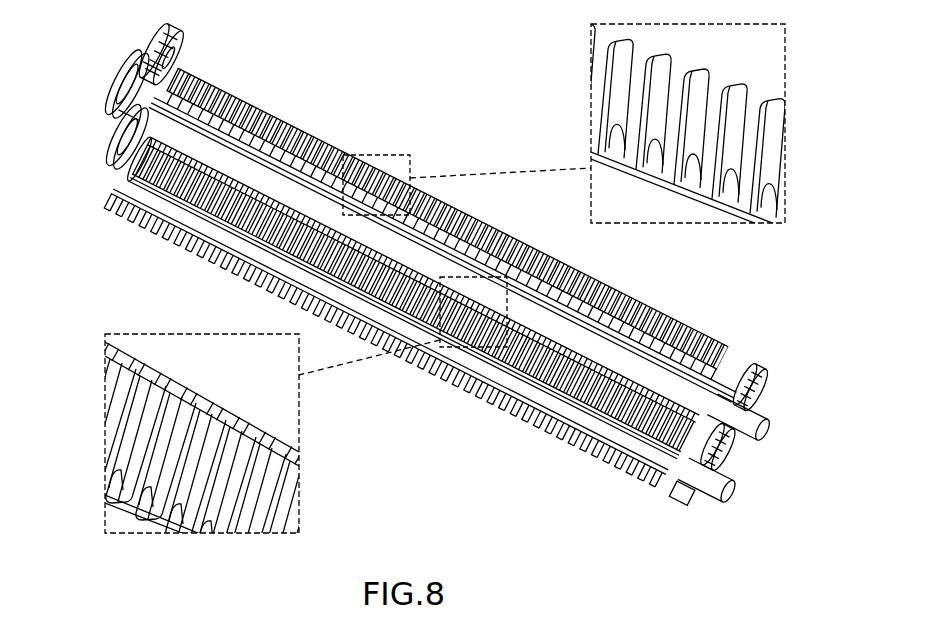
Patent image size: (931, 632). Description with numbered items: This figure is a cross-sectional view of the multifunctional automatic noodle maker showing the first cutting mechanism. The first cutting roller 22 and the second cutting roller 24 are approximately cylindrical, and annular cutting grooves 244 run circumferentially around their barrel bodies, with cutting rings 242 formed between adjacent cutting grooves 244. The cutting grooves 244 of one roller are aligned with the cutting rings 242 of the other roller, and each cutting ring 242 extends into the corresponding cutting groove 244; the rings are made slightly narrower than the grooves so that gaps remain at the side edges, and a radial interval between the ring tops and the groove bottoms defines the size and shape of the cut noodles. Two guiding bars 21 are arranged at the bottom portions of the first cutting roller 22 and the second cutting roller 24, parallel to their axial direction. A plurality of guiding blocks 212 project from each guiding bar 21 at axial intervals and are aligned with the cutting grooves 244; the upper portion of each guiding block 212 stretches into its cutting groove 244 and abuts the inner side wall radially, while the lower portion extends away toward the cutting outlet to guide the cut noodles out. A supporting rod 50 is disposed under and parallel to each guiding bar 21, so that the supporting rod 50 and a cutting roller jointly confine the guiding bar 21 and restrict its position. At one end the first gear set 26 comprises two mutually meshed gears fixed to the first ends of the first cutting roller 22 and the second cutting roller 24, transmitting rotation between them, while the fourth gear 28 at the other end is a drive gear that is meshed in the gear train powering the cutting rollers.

The guiding bar 21 is at (698, 365).
The first cutting roller 22 is at (150, 160).
The second cutting roller 24 is at (270, 145).
The first gear set 26 is at (763, 380).
The fourth gear 28 is at (150, 44).
The supporting rod 50 is at (610, 338).
The guiding block 212 is at (670, 145).
The cutting ring 242 is at (717, 87).
The cutting groove 244 is at (683, 112).